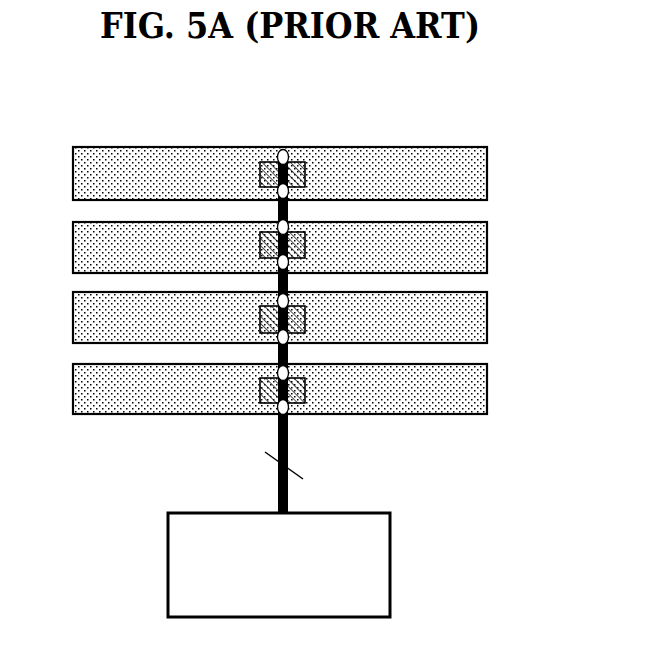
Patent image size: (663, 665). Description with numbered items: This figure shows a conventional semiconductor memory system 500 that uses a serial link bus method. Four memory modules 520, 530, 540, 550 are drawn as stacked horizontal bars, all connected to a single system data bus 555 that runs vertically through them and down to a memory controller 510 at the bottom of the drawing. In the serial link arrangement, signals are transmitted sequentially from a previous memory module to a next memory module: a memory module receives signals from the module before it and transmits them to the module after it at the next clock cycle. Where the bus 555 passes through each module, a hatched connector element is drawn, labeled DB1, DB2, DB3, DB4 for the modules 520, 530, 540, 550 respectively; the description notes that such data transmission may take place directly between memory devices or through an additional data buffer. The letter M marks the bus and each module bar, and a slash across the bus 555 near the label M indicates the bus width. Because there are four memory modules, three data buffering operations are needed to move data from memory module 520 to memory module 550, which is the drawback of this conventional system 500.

The semiconductor memory system 500 is at (493, 106).
The memory controller 510 is at (391, 569).
The memory module 520 is at (489, 389).
The memory module 530 is at (489, 318).
The memory module 540 is at (489, 248).
The memory module 550 is at (489, 174).
The system data bus 555 is at (277, 491).
The data bus connector DB1 is at (300, 406).
The data bus connector DB2 is at (305, 322).
The data bus connector DB3 is at (300, 238).
The data bus connector DB4 is at (291, 151).
The memory bus width indicator M is at (297, 469).